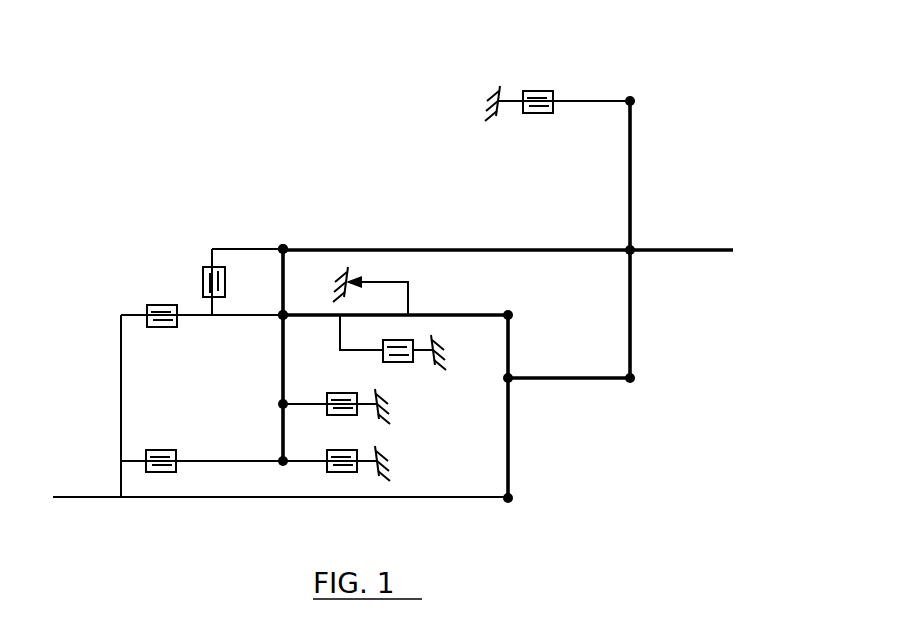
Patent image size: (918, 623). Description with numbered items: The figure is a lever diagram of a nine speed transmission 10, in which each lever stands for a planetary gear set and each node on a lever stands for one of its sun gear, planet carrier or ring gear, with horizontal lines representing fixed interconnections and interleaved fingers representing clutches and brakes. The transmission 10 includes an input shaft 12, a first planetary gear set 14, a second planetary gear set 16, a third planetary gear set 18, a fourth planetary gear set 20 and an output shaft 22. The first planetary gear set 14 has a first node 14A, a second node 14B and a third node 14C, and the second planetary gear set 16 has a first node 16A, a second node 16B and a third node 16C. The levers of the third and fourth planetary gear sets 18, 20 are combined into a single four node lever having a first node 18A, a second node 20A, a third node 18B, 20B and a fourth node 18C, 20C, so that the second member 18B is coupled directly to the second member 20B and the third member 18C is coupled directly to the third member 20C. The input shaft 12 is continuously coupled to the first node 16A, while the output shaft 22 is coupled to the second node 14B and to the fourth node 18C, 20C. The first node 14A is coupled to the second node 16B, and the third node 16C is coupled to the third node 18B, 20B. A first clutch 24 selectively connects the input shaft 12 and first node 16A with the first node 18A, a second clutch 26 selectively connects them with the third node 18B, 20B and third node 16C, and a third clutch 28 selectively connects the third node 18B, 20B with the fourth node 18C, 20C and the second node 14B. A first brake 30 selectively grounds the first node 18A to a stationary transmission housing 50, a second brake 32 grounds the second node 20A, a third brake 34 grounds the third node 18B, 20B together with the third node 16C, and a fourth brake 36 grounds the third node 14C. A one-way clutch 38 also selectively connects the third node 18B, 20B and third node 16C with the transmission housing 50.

The nine speed transmission 10 is at (692, 66).
The input shaft 12 is at (85, 499).
The first planetary gear set 14 is at (658, 352).
The first node of first planetary gear set 14A is at (632, 382).
The second node of first planetary gear set 14B is at (628, 247).
The third node of first planetary gear set 14C is at (629, 97).
The second planetary gear set 16 is at (494, 479).
The first node of second planetary gear set 16A is at (512, 497).
The second node of second planetary gear set 16B is at (510, 377).
The third node of second planetary gear set 16C is at (507, 312).
The third planetary gear set 18 is at (296, 220).
The first node of combined lever 18A is at (281, 466).
The second member of third planetary gear set 18B is at (281, 319).
The third member of third planetary gear set 18C is at (282, 246).
The fourth planetary gear set 20 is at (256, 431).
The second node of combined lever 20A is at (280, 403).
The second member of fourth planetary gear set 20B is at (283, 315).
The third member of fourth planetary gear set 20C is at (283, 249).
The output shaft 22 is at (705, 252).
The first clutch 24 is at (165, 450).
The second clutch 26 is at (160, 305).
The third clutch 28 is at (203, 279).
The first brake 30 is at (337, 476).
The second brake 32 is at (332, 393).
The third brake 34 is at (398, 340).
The fourth brake 36 is at (538, 91).
The one-way clutch 38 is at (368, 280).
The transmission housing 50 is at (497, 89).